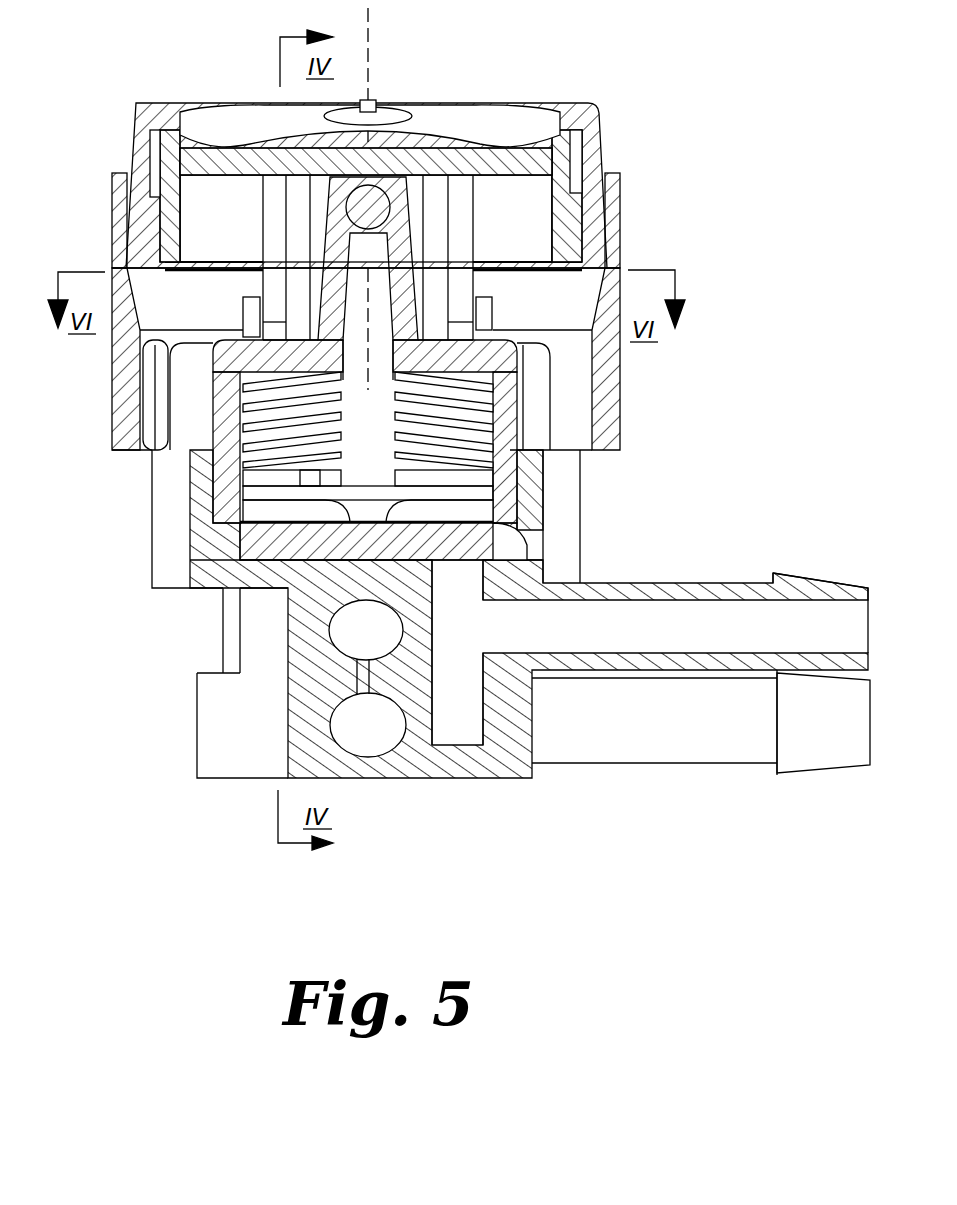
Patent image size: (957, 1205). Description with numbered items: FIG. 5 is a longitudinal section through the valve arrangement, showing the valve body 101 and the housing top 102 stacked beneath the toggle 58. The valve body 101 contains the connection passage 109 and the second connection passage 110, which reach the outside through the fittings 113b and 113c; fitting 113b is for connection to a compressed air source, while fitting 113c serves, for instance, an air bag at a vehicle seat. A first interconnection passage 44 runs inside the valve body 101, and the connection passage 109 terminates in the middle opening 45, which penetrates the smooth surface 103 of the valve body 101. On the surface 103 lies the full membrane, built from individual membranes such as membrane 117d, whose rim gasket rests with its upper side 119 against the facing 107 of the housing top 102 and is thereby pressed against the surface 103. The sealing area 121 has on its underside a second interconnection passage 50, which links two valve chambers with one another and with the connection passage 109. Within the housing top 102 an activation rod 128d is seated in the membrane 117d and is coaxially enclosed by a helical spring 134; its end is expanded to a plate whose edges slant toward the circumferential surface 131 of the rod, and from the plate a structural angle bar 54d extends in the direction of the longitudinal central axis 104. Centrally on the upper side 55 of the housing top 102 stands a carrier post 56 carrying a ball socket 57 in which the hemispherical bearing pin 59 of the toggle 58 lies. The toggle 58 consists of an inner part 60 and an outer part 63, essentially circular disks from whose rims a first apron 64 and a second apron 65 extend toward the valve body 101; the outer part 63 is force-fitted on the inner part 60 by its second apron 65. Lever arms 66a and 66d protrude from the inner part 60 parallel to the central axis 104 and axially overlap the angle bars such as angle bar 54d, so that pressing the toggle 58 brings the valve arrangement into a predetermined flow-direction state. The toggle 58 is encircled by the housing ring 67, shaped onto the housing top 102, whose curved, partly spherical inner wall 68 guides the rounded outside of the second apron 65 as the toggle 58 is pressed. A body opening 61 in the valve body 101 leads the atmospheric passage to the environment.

The first interconnection passage 44 is at (365, 656).
The middle opening 45 is at (470, 617).
The second interconnection passage 50 is at (482, 560).
The angle bar 54d is at (243, 316).
The upper side 55 is at (450, 300).
The carrier post 56 is at (402, 243).
The ball socket 57 is at (425, 228).
The toggle 58 is at (603, 110).
The bearing pin 59 is at (335, 215).
The inner part 60 is at (568, 162).
The body opening 61 is at (246, 128).
The outer part 63 is at (498, 128).
The first apron 64 is at (566, 185).
The second apron 65 is at (612, 232).
The lever arm 66a is at (270, 250).
The lever arm 66d is at (470, 255).
The housing ring 67 is at (610, 345).
The inner wall 68 is at (128, 235).
The valve body 101 is at (188, 540).
The housing top 102 is at (213, 512).
The surface 103 is at (228, 595).
The longitudinal central axis 104 is at (372, 102).
The facing 107 is at (522, 556).
The connection passage 109 is at (668, 600).
The second connection passage 110 is at (728, 735).
The fitting 113b is at (800, 588).
The fitting 113c is at (796, 746).
The individual membrane 117d is at (300, 510).
The upper side 119 is at (213, 553).
The sealing area 121 is at (358, 567).
The activation rod 128d is at (198, 445).
The circumferential surface 131 is at (396, 385).
The helical spring 134 is at (232, 365).